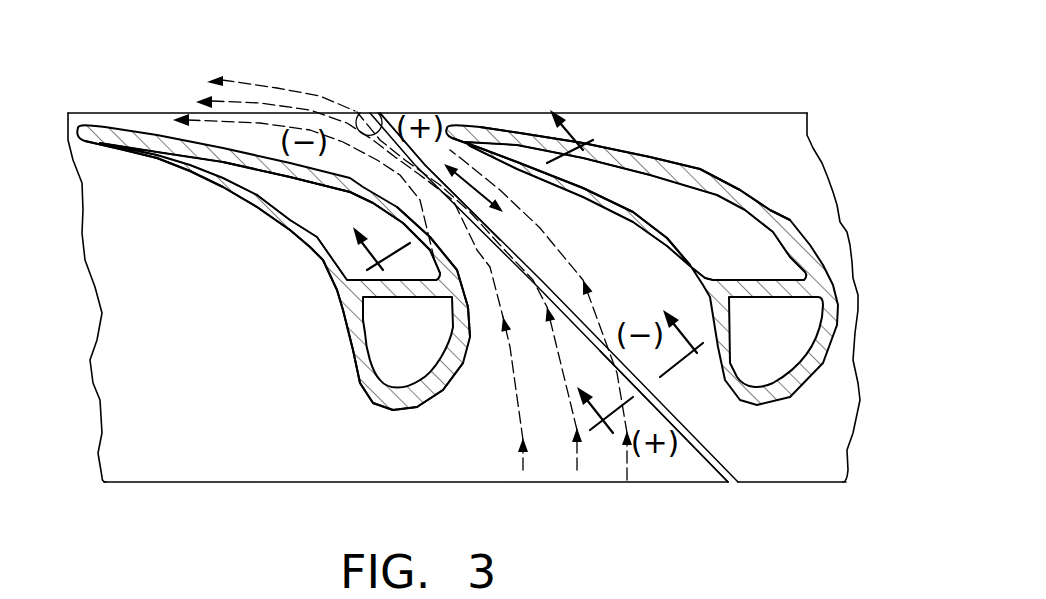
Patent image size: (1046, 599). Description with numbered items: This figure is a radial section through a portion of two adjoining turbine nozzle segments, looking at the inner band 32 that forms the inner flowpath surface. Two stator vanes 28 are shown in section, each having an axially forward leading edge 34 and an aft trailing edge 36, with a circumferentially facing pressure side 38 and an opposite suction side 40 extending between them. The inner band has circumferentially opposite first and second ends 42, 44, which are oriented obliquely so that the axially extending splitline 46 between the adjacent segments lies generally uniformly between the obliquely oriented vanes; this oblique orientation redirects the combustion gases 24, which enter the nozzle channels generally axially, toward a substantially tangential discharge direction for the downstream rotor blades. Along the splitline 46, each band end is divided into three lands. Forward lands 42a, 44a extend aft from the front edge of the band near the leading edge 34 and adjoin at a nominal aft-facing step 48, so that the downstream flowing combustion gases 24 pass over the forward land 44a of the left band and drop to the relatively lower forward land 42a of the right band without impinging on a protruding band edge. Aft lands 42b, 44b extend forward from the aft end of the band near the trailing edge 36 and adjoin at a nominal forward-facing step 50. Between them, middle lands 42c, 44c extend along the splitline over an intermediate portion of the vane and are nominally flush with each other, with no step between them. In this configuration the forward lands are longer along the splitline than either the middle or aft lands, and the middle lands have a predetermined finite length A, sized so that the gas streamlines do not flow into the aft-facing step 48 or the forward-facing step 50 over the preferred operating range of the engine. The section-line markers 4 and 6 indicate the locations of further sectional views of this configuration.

The combustion gases 24 is at (557, 482).
The stator vane 28 is at (700, 157).
The inner band 32 is at (102, 400).
The leading edge 34 is at (360, 397).
The trailing edge 36 is at (69, 113).
The pressure side 38 is at (236, 198).
The suction side 40 is at (465, 268).
The first end 42 is at (792, 483).
The forward land of first end 42a is at (612, 283).
The aft land of first end 42b is at (393, 113).
The middle land of first end 42c is at (507, 198).
The second end 44 is at (643, 483).
The forward land of second end 44a is at (566, 384).
The aft land of second end 44b is at (263, 120).
The middle land of second end 44c is at (357, 198).
The splitline 46 is at (735, 483).
The aft-facing step 48 is at (710, 453).
The forward-facing step 50 is at (358, 112).
The length of middle lands A is at (475, 188).
The section line 4- 4 is at (640, 365).
The section line 6- 6 is at (482, 190).